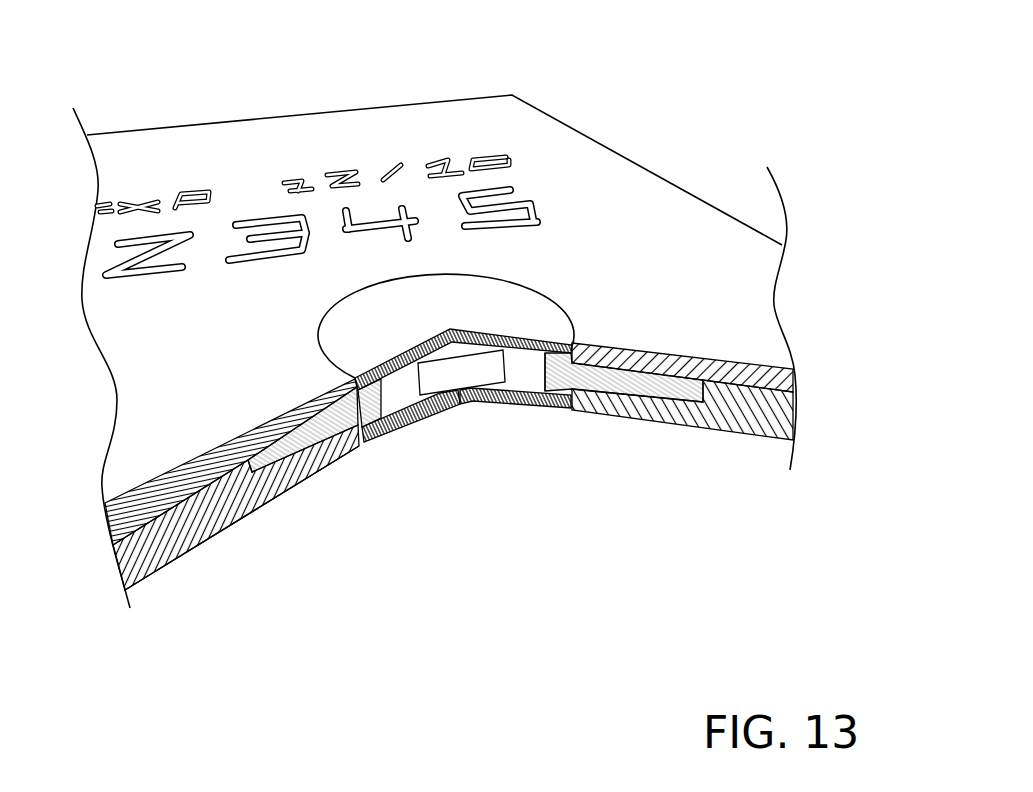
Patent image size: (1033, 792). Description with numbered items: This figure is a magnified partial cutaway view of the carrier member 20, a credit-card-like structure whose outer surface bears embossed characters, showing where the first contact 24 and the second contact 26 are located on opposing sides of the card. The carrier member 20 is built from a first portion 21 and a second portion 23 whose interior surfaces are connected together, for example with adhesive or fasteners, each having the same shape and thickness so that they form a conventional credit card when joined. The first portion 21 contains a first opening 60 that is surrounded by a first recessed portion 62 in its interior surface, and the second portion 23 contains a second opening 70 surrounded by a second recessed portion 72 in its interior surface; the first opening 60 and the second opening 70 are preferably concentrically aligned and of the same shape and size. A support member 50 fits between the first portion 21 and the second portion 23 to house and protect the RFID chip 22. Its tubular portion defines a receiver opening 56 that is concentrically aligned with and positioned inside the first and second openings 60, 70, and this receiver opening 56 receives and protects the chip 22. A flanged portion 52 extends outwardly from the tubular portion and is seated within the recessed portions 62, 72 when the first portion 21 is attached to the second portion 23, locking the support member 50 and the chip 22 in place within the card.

The carrier member 20 is at (553, 115).
The first portion 21 is at (160, 490).
The RFID chip 22 is at (462, 384).
The second portion 23 is at (190, 532).
The first contact 24 is at (462, 302).
The second contact 26 is at (392, 418).
The support member 50 is at (632, 366).
The flanged portion 52 is at (663, 387).
The receiver opening 56 is at (547, 363).
The first opening 60 is at (566, 312).
The first recessed portion 62 is at (295, 433).
The second opening 70 is at (567, 407).
The second recessed portion 72 is at (312, 470).